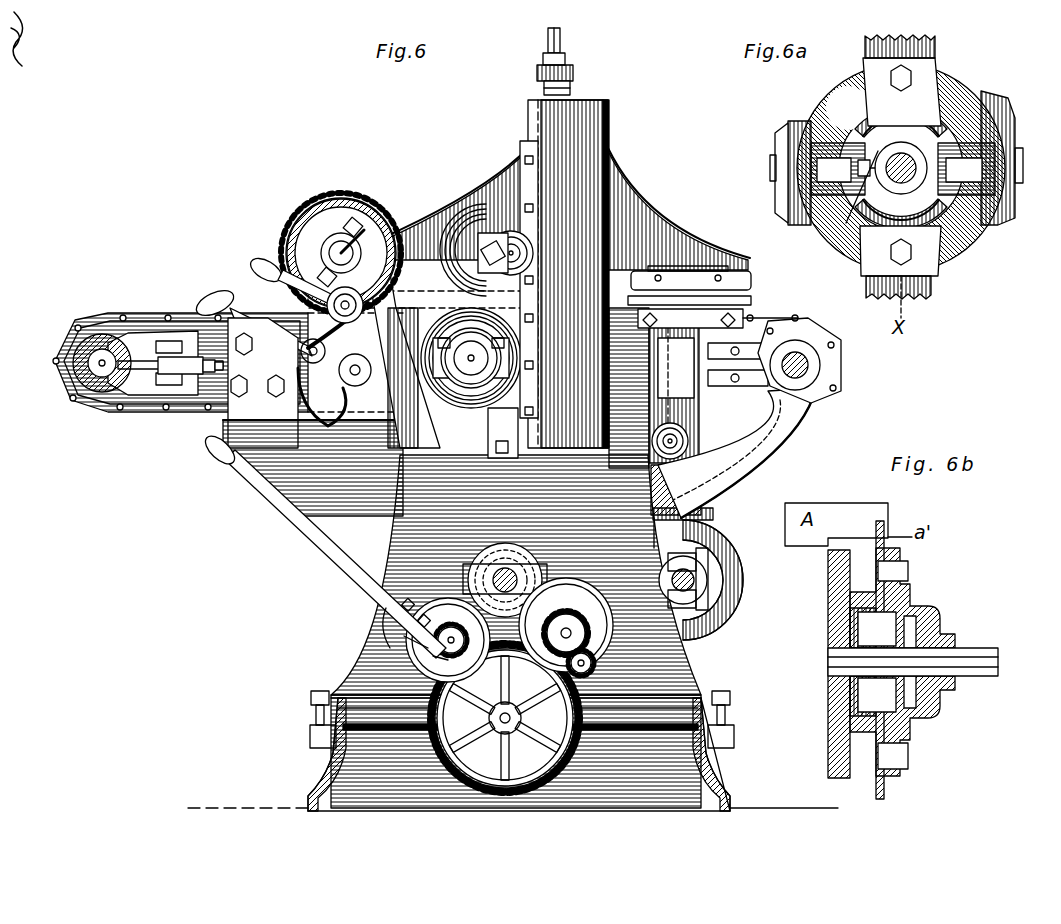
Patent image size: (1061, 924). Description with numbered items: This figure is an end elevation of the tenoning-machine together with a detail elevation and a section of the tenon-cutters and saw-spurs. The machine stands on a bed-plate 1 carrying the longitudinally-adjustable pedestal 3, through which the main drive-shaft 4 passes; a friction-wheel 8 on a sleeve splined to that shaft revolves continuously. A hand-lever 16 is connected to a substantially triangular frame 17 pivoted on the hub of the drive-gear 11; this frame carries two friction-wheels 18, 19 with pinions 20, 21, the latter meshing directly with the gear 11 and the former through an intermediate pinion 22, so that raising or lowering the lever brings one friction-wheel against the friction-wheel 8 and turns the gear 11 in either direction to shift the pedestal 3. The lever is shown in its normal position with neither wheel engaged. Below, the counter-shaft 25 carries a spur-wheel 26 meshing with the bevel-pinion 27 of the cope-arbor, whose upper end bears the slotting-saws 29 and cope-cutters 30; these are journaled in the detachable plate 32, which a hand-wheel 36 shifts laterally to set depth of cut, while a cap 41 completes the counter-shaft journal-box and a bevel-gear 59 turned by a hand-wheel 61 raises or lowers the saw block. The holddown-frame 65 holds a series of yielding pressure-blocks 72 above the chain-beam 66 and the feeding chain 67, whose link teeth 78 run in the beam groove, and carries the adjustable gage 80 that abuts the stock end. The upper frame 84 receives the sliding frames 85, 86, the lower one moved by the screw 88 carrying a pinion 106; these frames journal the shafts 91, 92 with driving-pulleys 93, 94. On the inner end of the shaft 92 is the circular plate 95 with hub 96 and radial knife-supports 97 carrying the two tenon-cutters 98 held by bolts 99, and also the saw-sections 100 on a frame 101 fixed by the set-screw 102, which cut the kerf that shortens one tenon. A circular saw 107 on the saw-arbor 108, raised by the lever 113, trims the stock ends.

In FIG. 6, the bed-plate 1 is at (325, 763).
In FIG. 6, the longitudinally-adjustable pedestal 3 is at (378, 599).
In FIG. 6, the main drive-shaft 4 is at (497, 548).
In FIG. 6, the friction-wheel 8 is at (530, 548).
In FIG. 6, the drive-gear 11 is at (548, 758).
In FIG. 6, the hand-lever 16 is at (320, 545).
In FIG. 6, the triangular frame 17 is at (396, 627).
In FIG. 6, the friction-wheel 18 is at (566, 625).
In FIG. 6, the friction-wheel 19 is at (448, 636).
In FIG. 6, the pinion 20 is at (580, 640).
In FIG. 6, the pinion 21 is at (425, 647).
In FIG. 6, the intermediate pinion 22 is at (668, 646).
In FIG. 6, the counter-shaft 25 is at (716, 597).
In FIG. 6, the spur-wheel 26 is at (722, 614).
In FIG. 6, the bevel-pinion 27 is at (700, 507).
In FIG. 6, the slotting-saws 29 is at (745, 290).
In FIG. 6, the cope-cutters 30 is at (745, 305).
In FIG. 6, the detachable plate 32 is at (718, 547).
In FIG. 6, the hand-wheel 36 is at (690, 468).
In FIG. 6, the cap 41 is at (716, 579).
In FIG. 6, the bevel-gear 59 is at (704, 442).
In FIG. 6, the hand-wheel 61 is at (770, 428).
In FIG. 6, the holddown-frame 65 is at (472, 182).
In FIG. 6, the chain-beam 66 is at (150, 395).
In FIG. 6, the chain 67 is at (82, 400).
In FIG. 6, the pressure-blocks 72 is at (425, 283).
In FIG. 6, the tooth 78 is at (96, 324).
In FIG. 6, the adjustable gage 80 is at (720, 266).
In FIG. 6, the upper frame 84 is at (600, 107).
In FIG. 6, the sliding frame 85 is at (530, 320).
In FIG. 6, the sliding frame 86 is at (531, 240).
In FIG. 6, the screw 88 is at (552, 28).
In FIG. 6, the shaft 91 is at (483, 232).
In FIG. 6, the shaft 92 is at (468, 360).
In FIG. 6A, the shaft 92 is at (896, 148).
In FIG. 6B, the shaft 92 is at (990, 650).
In FIG. 6, the driving-pulley 93 is at (445, 240).
In FIG. 6, the driving-pulley 94 is at (470, 400).
In FIG. 6A, the circular plate 95 is at (925, 208).
In FIG. 6B, the circular plate 95 is at (822, 746).
In FIG. 6A, the hub 96 is at (905, 180).
In FIG. 6B, the hub 96 is at (848, 686).
In FIG. 6A, the knife-supports 97 is at (903, 169).
In FIG. 6A, the tenon-cutters 98 is at (1003, 112).
In FIG. 6A, the bolts 99 is at (766, 152).
In FIG. 6A, the saw-sections 100 is at (920, 40).
In FIG. 6B, the saw-sections 100 is at (876, 520).
In FIG. 6A, the frame 101 is at (922, 76).
In FIG. 6B, the frame 101 is at (905, 595).
In FIG. 6A, the set-screw 102 is at (853, 197).
In FIG. 6, the pinion 106 is at (565, 64).
In FIG. 6, the circular saw 107 is at (298, 208).
In FIG. 6, the saw-arbor 108 is at (345, 232).
In FIG. 6, the lever 113 is at (200, 290).